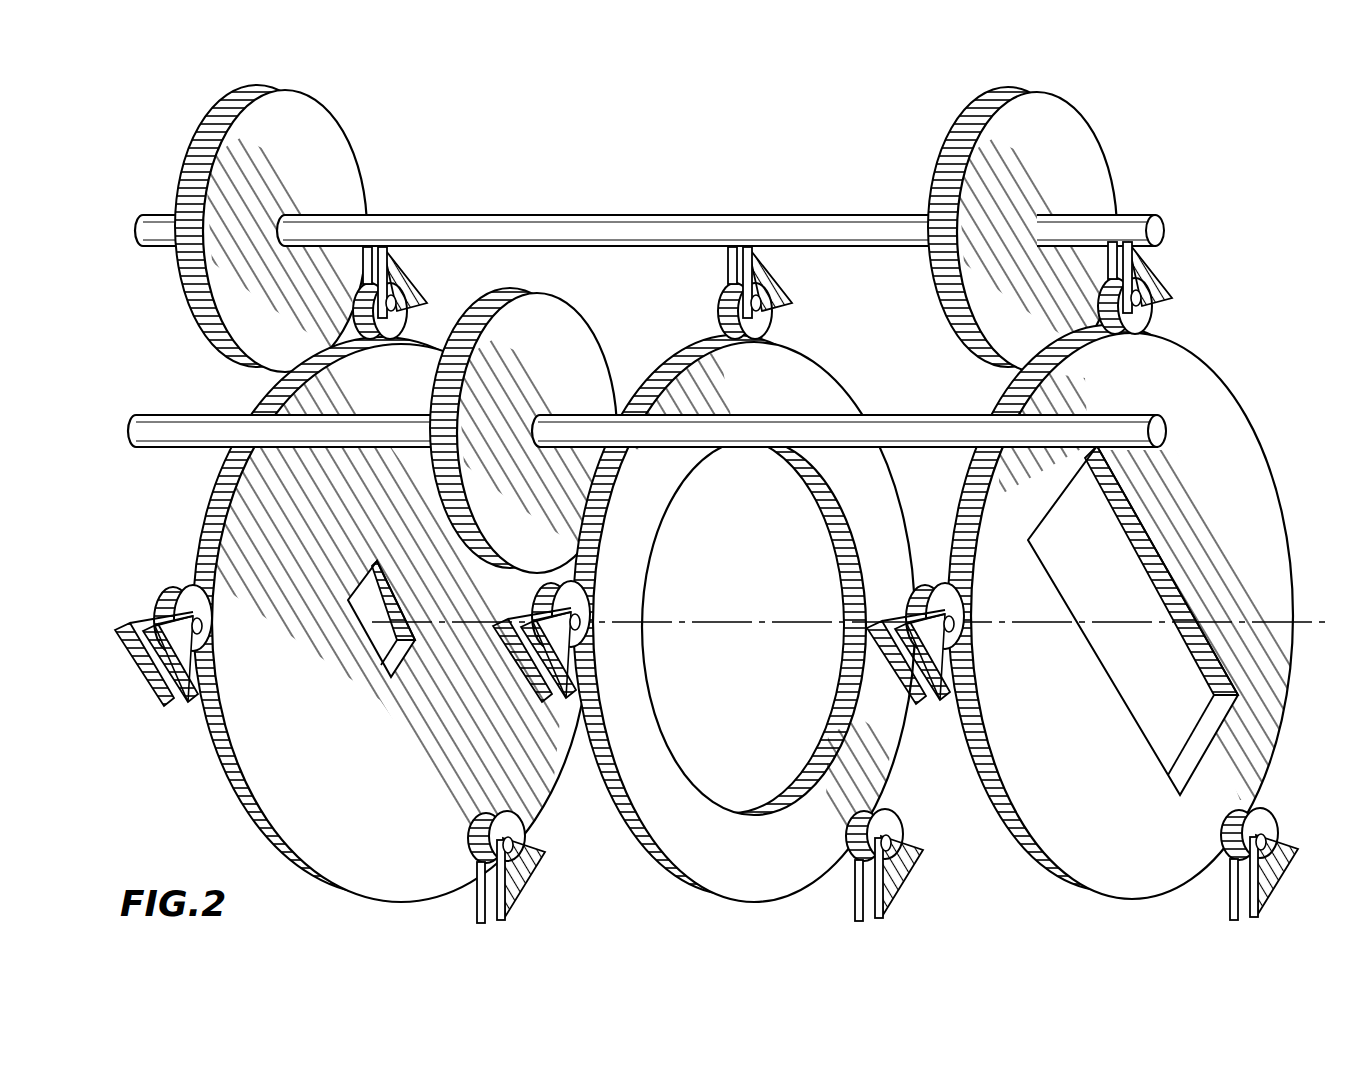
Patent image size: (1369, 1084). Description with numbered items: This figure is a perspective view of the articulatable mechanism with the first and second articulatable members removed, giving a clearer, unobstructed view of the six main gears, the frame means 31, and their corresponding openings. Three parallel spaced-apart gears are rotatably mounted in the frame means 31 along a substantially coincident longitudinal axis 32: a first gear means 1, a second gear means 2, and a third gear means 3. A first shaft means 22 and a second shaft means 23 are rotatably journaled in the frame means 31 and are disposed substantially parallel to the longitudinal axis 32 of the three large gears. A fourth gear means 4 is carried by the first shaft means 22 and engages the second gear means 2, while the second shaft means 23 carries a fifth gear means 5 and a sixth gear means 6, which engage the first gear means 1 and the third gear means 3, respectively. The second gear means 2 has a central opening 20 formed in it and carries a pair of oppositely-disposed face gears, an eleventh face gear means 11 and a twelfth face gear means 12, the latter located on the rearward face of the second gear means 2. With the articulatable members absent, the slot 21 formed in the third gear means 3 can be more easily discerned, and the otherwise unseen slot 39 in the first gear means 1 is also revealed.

The first gear means 1 is at (225, 790).
The second gear means 2 is at (660, 873).
The third gear means 3 is at (1040, 878).
The fourth gear means 4 is at (565, 318).
The fifth gear means 5 is at (327, 145).
The sixth gear means 6 is at (1090, 148).
The eleventh face gear means 11 is at (743, 626).
The twelfth face gear means 12 is at (735, 838).
The central opening 20 is at (835, 708).
The slot 21 is at (1132, 532).
The first shaft means 22 is at (985, 415).
The second shaft means 23 is at (800, 215).
The frame means 31 is at (393, 327).
The longitudinal axis 32 is at (748, 622).
The slot 39 is at (385, 663).